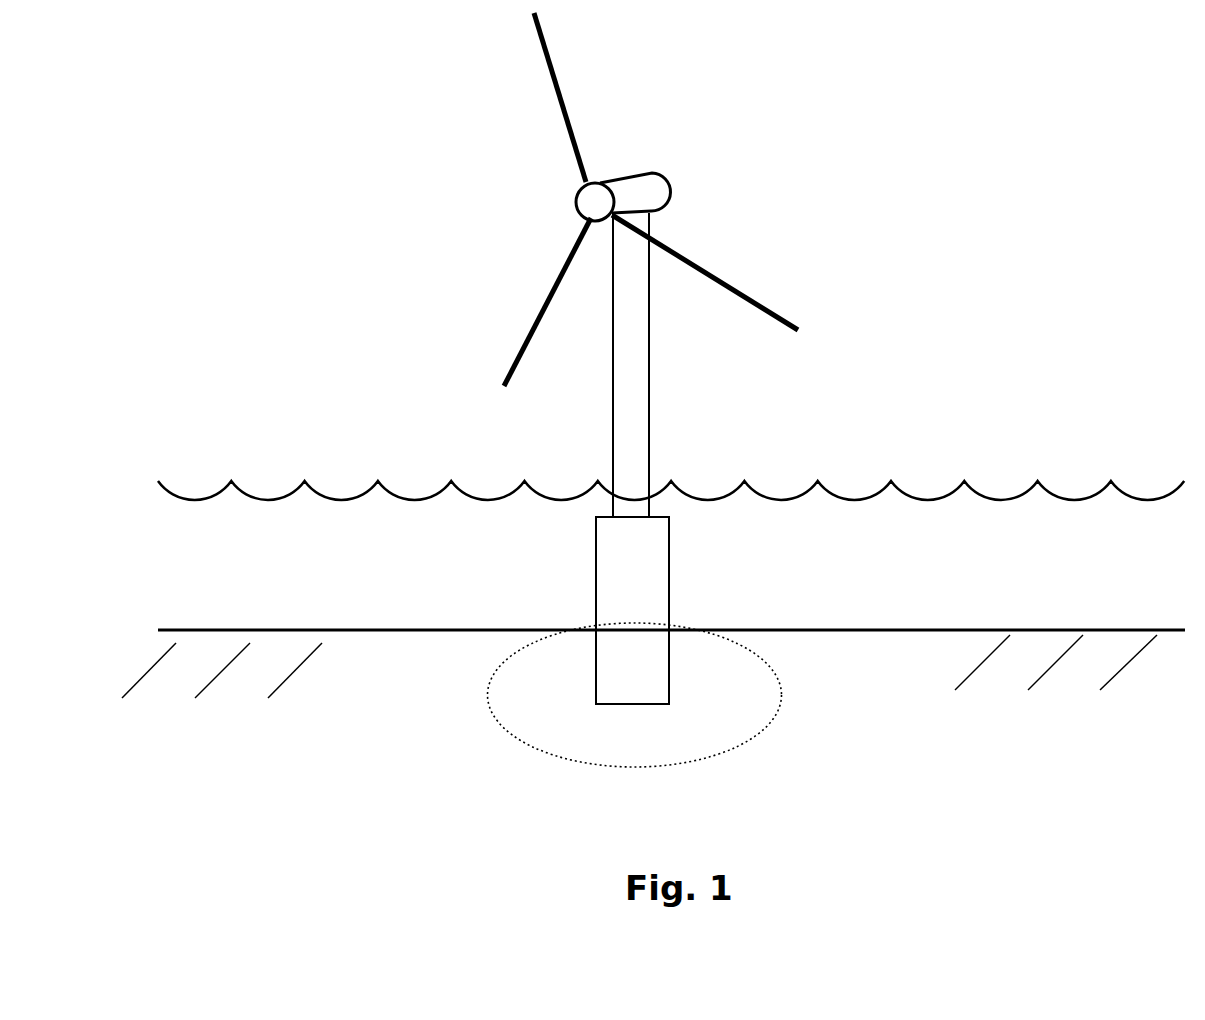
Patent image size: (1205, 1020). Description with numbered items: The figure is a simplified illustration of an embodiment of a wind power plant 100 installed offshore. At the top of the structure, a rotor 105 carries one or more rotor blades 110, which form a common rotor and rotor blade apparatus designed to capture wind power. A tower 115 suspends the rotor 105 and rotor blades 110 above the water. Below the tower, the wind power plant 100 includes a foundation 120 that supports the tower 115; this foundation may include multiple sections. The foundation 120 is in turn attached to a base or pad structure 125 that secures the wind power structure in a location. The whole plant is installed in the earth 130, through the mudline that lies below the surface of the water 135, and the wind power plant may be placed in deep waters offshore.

The wind power plant 100 is at (330, 134).
The rotor 105 is at (638, 173).
The rotor blades 110 is at (733, 287).
The tower 115 is at (647, 422).
The foundation 120 is at (669, 593).
The base or pad structure 125 is at (775, 712).
The earth 130 is at (1018, 628).
The water 135 is at (1073, 478).